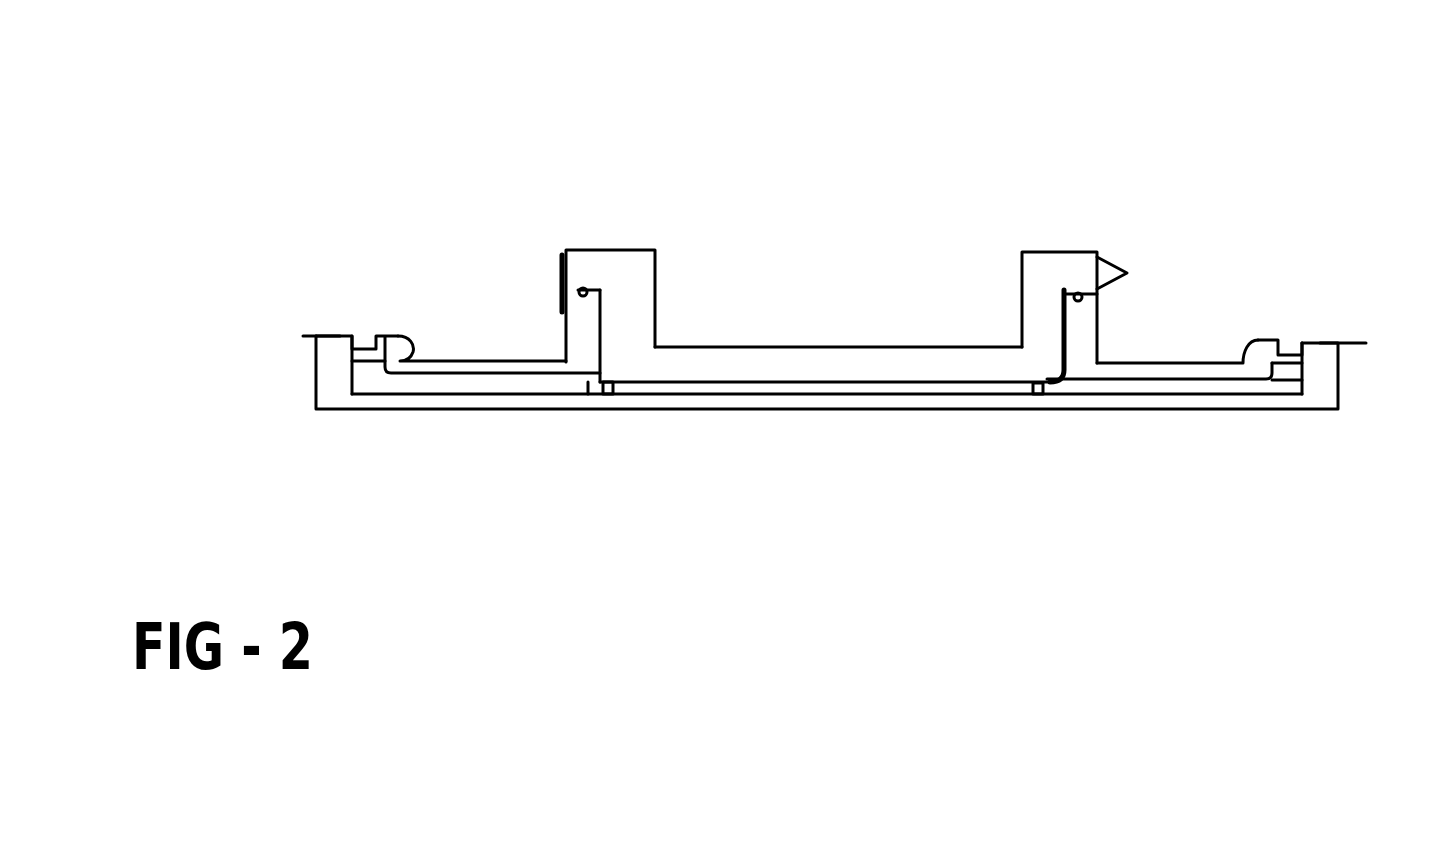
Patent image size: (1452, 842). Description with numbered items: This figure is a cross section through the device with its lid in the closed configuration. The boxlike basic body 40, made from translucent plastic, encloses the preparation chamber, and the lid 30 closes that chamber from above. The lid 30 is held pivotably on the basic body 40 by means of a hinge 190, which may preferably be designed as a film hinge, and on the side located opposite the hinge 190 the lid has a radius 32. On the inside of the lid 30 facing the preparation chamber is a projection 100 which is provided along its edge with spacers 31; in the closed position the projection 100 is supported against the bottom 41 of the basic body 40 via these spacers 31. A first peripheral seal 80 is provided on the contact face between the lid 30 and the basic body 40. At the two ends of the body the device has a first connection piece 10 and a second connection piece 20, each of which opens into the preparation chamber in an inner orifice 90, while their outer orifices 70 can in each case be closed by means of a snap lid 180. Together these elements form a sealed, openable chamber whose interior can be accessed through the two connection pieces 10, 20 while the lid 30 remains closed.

The first connection piece 10 is at (1170, 373).
The second connection piece 20 is at (400, 398).
The lid 30 is at (1068, 275).
The spacers 31 is at (1048, 388).
The radius 32 is at (1110, 364).
The basic body 40 is at (590, 352).
The bottom 41 is at (833, 398).
The outer orifices 70 is at (365, 378).
The first peripheral seal 80 is at (586, 291).
The inner orifice 90 is at (588, 385).
The projection 100 is at (815, 363).
The snap lid 180 is at (327, 337).
The hinge 190 is at (563, 288).